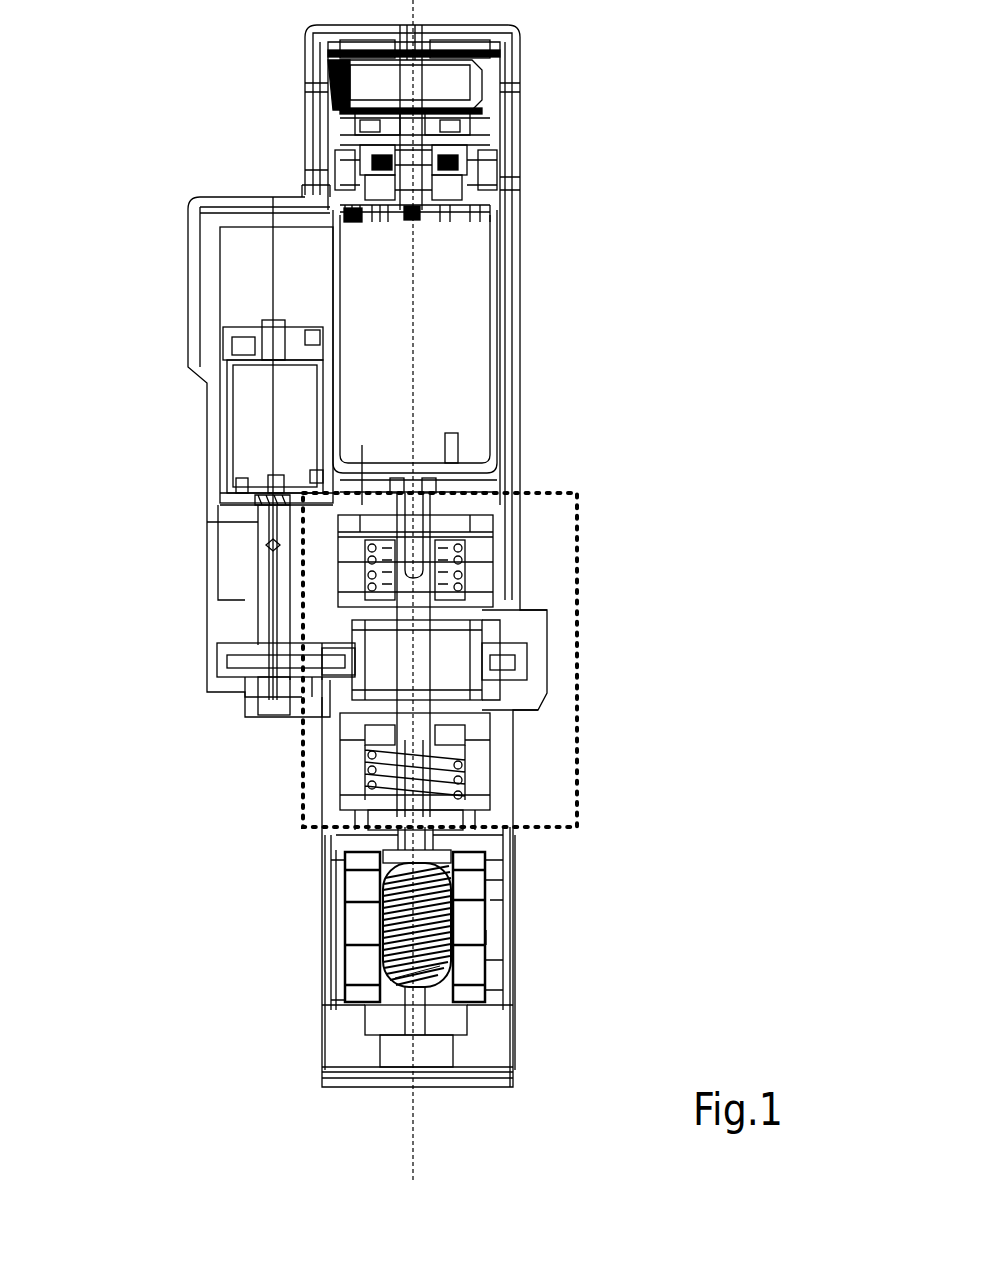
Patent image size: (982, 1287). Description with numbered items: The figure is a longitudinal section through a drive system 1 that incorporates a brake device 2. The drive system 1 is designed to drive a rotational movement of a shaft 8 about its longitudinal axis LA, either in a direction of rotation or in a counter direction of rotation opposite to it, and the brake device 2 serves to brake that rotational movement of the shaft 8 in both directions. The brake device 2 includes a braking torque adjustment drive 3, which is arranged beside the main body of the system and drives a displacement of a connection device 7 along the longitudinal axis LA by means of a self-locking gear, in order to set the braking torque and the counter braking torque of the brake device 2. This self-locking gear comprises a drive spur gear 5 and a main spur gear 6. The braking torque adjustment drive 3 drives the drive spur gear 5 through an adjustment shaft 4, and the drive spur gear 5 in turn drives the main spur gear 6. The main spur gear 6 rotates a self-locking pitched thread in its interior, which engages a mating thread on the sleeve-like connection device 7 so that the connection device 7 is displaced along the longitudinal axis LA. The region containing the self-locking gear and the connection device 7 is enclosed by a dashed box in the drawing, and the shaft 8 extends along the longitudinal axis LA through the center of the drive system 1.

The drive system 1 is at (548, 328).
The brake device 2 is at (172, 645).
The braking torque adjustment drive 3 is at (238, 400).
The adjustment shaft 4 is at (262, 576).
The drive spur gear 5 is at (232, 650).
The main spur gear 6 is at (315, 660).
The connection device 7 is at (378, 666).
The shaft 8 is at (405, 685).
The longitudinal axis LA is at (425, 1152).